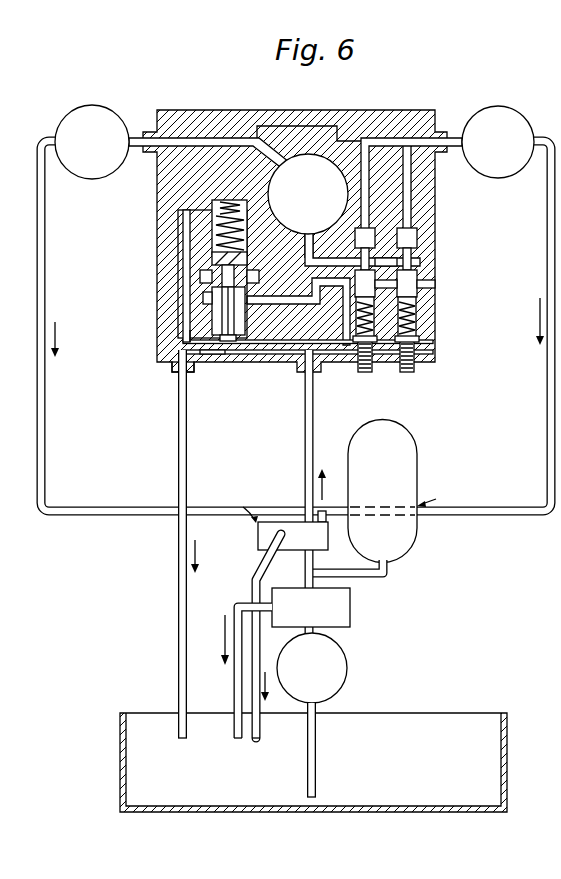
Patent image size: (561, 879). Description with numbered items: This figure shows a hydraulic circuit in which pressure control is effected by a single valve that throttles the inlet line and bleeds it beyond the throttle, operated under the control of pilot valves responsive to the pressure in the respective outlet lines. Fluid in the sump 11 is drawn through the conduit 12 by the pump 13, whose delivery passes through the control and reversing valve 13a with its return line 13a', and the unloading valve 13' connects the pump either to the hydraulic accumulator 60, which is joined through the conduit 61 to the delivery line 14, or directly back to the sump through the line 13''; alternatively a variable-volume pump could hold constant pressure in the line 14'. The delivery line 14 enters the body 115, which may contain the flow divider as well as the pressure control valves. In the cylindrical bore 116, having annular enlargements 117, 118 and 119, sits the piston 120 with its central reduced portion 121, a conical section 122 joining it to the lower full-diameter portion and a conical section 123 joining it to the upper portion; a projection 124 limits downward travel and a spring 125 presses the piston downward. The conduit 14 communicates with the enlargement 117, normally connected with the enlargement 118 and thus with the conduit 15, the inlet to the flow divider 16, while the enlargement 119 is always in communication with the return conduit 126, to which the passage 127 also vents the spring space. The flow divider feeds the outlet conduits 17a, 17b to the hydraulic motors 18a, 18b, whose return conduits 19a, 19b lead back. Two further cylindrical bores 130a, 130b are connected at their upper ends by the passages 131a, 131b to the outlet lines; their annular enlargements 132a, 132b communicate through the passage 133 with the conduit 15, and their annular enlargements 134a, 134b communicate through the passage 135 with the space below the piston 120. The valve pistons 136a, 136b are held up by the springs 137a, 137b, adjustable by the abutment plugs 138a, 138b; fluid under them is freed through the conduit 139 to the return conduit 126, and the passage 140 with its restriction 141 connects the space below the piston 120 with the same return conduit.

The sump 11 is at (120, 767).
The conduit 12 is at (312, 727).
The pump 13 is at (327, 668).
The unloading valve 13' is at (311, 611).
The line 13'' is at (233, 672).
The control and reversing valve 13a is at (260, 514).
The return line 13a' is at (244, 636).
The delivery line 14 is at (295, 436).
The line 14' is at (290, 569).
The conduit 15 is at (287, 242).
The flow divider 16 is at (309, 154).
The outlet conduit 17a is at (137, 136).
The outlet conduit 17b is at (455, 137).
The hydraulic motor 18a is at (90, 105).
The hydraulic motor 18b is at (530, 94).
The return conduit 19a is at (45, 433).
The return conduit 19b is at (548, 409).
The hydraulic accumulator 60 is at (434, 491).
The conduit 61 is at (387, 574).
The body 115 is at (376, 107).
The cylindrical bore 116 is at (193, 333).
The annular enlargement 117 is at (210, 318).
The annular enlargement 118 is at (218, 281).
The annular enlargement 119 is at (210, 232).
The piston 120 is at (210, 258).
The central reduced portion 121 is at (223, 292).
The conical section 122 is at (207, 303).
The conical section 123 is at (203, 272).
The projection 124 is at (218, 358).
The spring 125 is at (218, 210).
The return conduit 126 is at (178, 451).
The passage 127 is at (178, 212).
The cylindrical bore 130a is at (373, 262).
The cylindrical bore 130b is at (415, 262).
The passage 131a is at (378, 236).
The passage 131b is at (418, 238).
The annular enlargement 132a is at (298, 311).
The annular enlargement 132b is at (425, 283).
The passage 133 is at (312, 262).
The annular enlargement 134a is at (390, 262).
The annular enlargement 134b is at (397, 284).
The passage 135 is at (271, 350).
The valve piston 136a is at (375, 305).
The valve piston 136b is at (417, 312).
The spring 137a is at (405, 358).
The spring 137b is at (414, 345).
The adjustable spring abutment plug 138a is at (360, 350).
The adjustable spring abutment plug 138b is at (419, 340).
The conduit 139 is at (243, 353).
The passage 140 is at (193, 373).
The restriction 141 is at (187, 343).